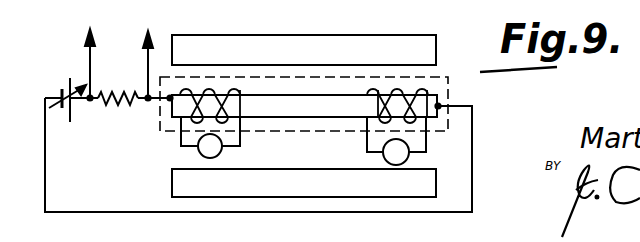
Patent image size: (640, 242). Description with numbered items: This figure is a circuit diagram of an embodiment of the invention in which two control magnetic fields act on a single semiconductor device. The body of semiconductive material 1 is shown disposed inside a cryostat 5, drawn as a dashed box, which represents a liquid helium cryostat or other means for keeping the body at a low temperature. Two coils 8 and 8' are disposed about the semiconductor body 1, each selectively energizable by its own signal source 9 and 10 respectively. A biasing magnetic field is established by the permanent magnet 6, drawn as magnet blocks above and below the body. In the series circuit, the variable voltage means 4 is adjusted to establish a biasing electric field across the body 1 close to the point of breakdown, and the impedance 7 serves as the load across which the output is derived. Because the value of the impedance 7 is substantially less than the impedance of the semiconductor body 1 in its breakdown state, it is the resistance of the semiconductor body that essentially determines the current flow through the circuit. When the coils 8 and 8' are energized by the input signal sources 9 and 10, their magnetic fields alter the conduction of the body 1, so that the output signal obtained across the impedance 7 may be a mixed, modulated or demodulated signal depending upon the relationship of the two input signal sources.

The body of semiconductive material 1 is at (441, 100).
The variable voltage means 4 is at (70, 80).
The cryostat 5 is at (155, 131).
The permanent magnet 6 is at (183, 35).
The impedance 7 is at (116, 101).
The coil 8 is at (224, 106).
The coil 8' is at (377, 106).
The signal source 9 is at (198, 151).
The signal source 10 is at (383, 155).